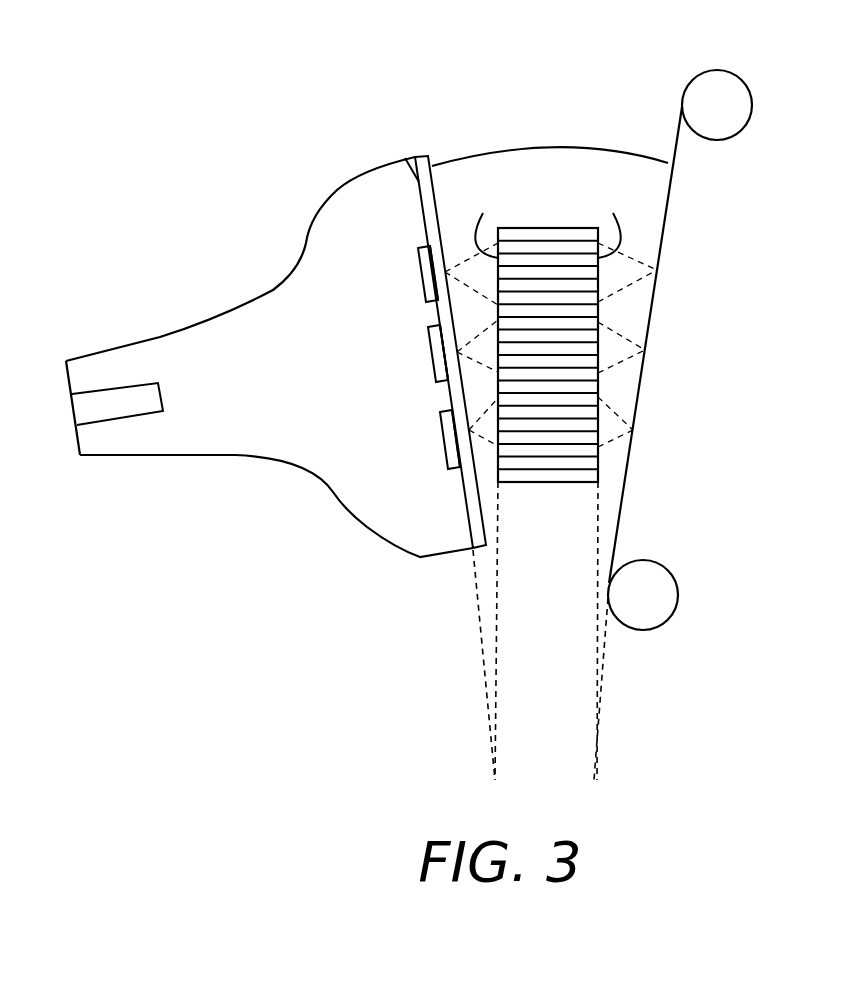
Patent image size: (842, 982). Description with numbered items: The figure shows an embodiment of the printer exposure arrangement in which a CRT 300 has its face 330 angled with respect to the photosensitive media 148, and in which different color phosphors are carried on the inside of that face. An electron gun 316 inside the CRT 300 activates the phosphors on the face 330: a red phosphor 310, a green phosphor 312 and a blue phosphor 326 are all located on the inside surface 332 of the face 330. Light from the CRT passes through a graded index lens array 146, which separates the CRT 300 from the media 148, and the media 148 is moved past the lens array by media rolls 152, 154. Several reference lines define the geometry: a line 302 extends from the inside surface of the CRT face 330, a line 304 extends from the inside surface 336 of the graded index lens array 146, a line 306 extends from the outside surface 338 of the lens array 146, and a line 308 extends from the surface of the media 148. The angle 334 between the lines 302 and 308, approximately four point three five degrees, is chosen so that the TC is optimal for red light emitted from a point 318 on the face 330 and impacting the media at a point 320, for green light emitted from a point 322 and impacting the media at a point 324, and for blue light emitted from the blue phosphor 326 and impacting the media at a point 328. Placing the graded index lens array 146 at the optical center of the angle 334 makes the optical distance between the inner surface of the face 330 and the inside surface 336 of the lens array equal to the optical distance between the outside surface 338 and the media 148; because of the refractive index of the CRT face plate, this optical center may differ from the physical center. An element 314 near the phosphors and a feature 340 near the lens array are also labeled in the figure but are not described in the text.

The CRT 300 is at (311, 224).
The electron gun 316 is at (163, 392).
The inside surface 332 is at (405, 157).
The face 330 is at (425, 157).
The angle 334 is at (558, 150).
The red phosphor 310 is at (422, 250).
The point 318 is at (420, 266).
The green phosphor 312 is at (432, 331).
The point 322 is at (430, 348).
The third light source 314 is at (445, 415).
The blue phosphor 326 is at (441, 437).
The graded index lens array 146 is at (547, 228).
The inside surface 336 is at (485, 220).
The outside surface 338 is at (624, 221).
The point 320 is at (656, 270).
The point 324 is at (647, 350).
The point 328 is at (634, 432).
The photosensitive media 148 is at (654, 300).
The media roll 154 is at (748, 88).
The media roll 152 is at (674, 580).
The light path boundaries 340 is at (603, 557).
The line 302 is at (468, 634).
The line 304 is at (508, 638).
The line 306 is at (586, 639).
The line 308 is at (615, 643).